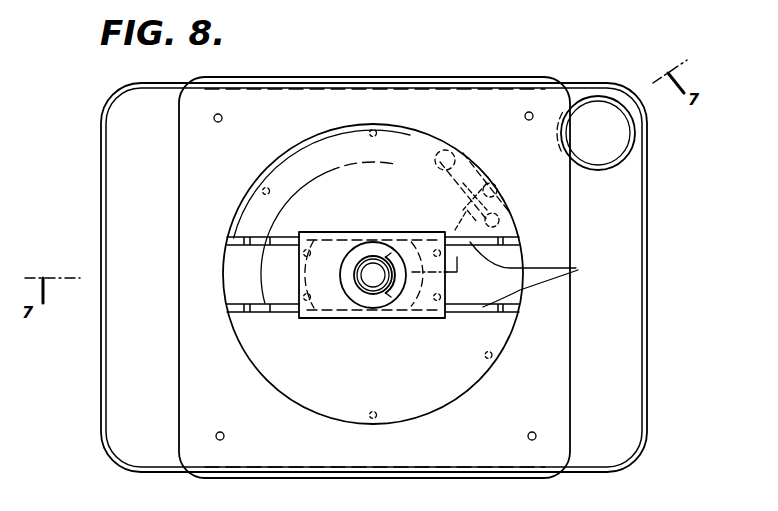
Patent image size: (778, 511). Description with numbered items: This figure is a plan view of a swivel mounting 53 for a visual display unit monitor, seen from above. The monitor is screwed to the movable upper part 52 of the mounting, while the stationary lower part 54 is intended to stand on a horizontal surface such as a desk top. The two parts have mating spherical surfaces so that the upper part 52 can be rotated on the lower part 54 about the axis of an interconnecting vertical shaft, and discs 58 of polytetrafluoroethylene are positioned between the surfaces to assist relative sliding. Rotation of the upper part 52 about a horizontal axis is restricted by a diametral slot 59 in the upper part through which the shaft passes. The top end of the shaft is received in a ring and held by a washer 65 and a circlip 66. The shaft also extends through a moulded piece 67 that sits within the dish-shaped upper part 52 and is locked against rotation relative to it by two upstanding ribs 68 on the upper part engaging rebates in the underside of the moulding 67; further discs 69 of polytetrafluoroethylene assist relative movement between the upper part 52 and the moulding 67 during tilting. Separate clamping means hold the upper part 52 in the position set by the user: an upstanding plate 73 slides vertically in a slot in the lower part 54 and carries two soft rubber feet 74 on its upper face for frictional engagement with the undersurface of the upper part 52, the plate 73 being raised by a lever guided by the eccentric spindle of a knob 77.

The movable upper part 52 is at (190, 205).
The swivel mounting 53 is at (98, 340).
The stationary lower part 54 is at (125, 245).
The discs 58 is at (262, 180).
The diametral slot 59 is at (427, 320).
The washer 65 is at (373, 308).
The circlip 66 is at (392, 258).
The moulded piece 67 is at (300, 282).
The upstanding ribs 68 is at (544, 274).
The further discs 69 is at (322, 230).
The upstanding plate 73 is at (463, 148).
The soft rubber feet 74 is at (478, 160).
The knob 77 is at (593, 108).